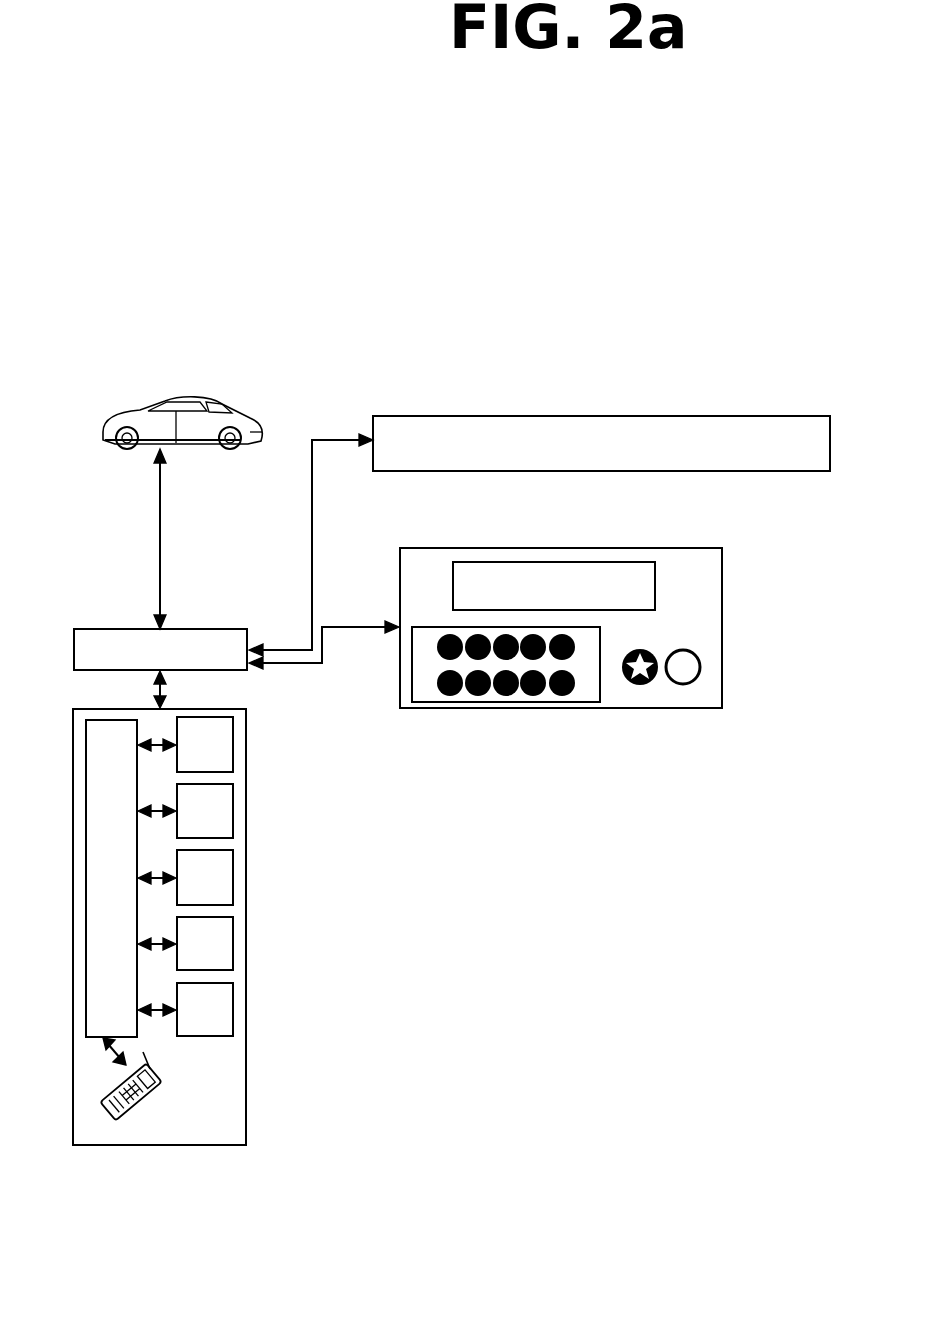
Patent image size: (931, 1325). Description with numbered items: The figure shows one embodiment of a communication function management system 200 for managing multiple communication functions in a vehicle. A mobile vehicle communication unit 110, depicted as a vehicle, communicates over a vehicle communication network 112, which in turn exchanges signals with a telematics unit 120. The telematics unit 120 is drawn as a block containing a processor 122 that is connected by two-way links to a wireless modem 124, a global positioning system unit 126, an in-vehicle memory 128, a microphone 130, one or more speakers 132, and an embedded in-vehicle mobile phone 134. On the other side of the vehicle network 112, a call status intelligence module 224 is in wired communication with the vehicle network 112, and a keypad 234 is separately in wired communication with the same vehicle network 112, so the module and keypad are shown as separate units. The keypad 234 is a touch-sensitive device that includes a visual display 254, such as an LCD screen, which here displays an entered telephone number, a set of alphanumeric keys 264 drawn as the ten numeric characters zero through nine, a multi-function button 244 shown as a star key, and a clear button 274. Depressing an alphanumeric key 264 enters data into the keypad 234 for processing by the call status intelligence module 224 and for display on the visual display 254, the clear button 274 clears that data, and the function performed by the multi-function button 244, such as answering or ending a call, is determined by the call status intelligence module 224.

The communication function management system 200 is at (780, 103).
The mobile vehicle communication unit 110 is at (141, 407).
The vehicle communication network 112 is at (160, 649).
The telematics unit 120 is at (153, 1170).
The processor 122 is at (111, 878).
The wireless modem 124 is at (185, 744).
The global positioning system unit 126 is at (185, 811).
The in-vehicle memory 128 is at (185, 877).
The microphone 130 is at (185, 943).
The speakers 132 is at (185, 1009).
The in-vehicle mobile phone 134 is at (156, 1086).
The call status intelligence module 224 is at (601, 443).
The keypad 234 is at (722, 574).
The multi-function button 244 is at (649, 683).
The visual display 254 is at (537, 562).
The alphanumeric keys 264 is at (412, 683).
The clear button 274 is at (704, 665).